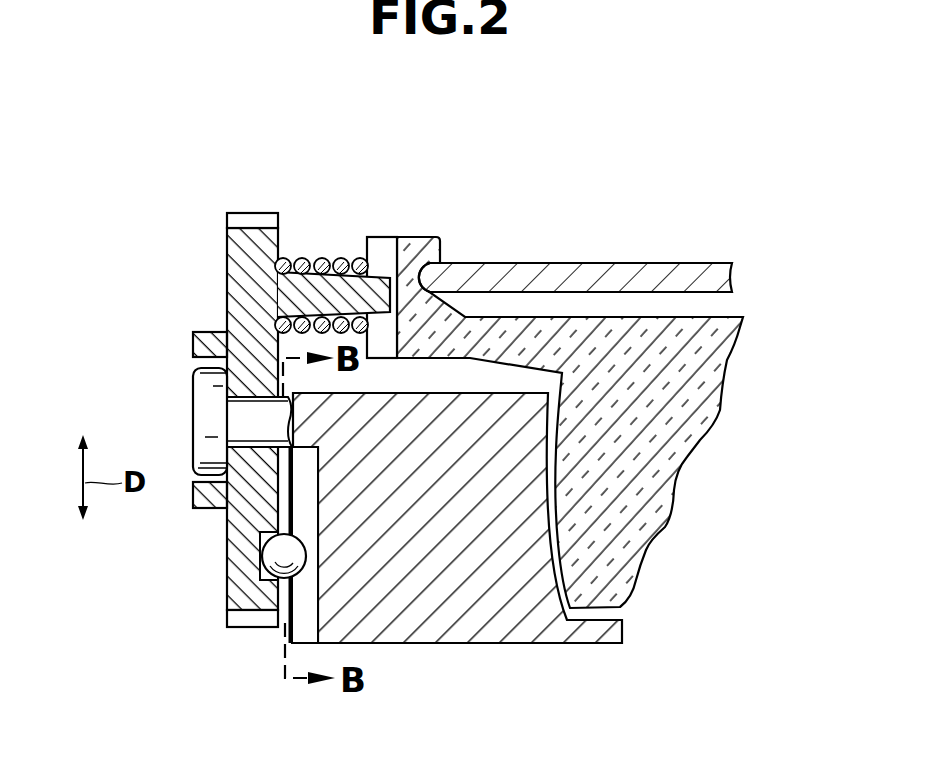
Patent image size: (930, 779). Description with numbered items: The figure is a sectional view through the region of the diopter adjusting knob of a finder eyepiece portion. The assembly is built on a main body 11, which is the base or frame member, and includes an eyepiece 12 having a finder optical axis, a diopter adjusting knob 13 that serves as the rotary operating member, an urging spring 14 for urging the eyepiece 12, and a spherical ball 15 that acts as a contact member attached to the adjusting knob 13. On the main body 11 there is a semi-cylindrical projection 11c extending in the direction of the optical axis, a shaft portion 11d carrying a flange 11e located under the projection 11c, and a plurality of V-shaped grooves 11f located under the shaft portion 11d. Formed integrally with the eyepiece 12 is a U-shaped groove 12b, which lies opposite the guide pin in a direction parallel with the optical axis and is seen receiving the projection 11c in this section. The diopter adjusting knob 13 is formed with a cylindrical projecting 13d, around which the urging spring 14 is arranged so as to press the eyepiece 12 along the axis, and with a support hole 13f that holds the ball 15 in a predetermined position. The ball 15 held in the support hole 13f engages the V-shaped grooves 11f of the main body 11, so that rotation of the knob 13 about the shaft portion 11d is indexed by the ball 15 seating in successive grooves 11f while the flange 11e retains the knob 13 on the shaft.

The main body 11 is at (684, 262).
The semi-cylindrical projection 11c is at (443, 272).
The shaft portion 11d is at (253, 392).
The flange 11e is at (193, 412).
The V-shaped grooves 11f is at (313, 602).
The eyepiece 12 is at (678, 403).
The U-shaped groove 12b is at (417, 262).
The diopter adjusting knob 13 is at (223, 262).
The cylindrical projecting 13d is at (380, 278).
The support hole 13f is at (260, 543).
The urging spring 14 is at (322, 262).
The spherical ball 15 is at (262, 553).